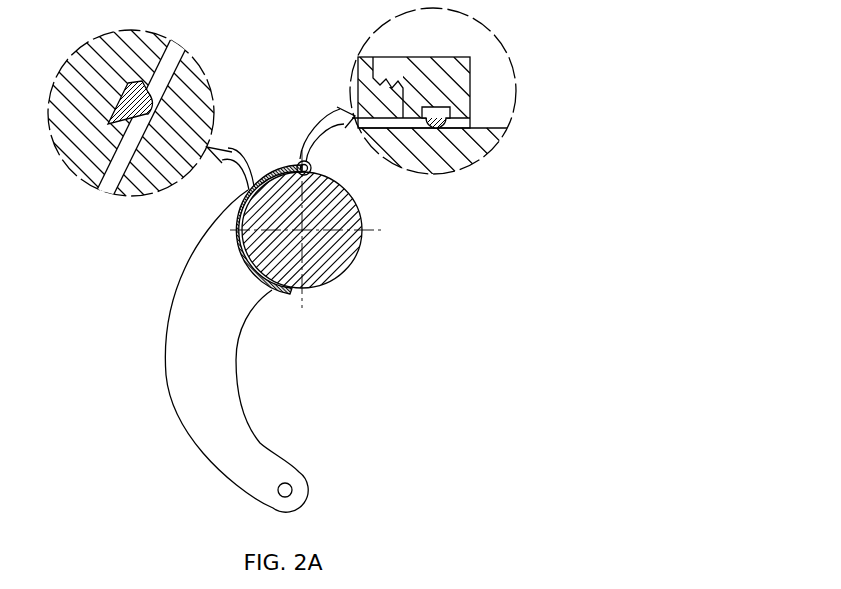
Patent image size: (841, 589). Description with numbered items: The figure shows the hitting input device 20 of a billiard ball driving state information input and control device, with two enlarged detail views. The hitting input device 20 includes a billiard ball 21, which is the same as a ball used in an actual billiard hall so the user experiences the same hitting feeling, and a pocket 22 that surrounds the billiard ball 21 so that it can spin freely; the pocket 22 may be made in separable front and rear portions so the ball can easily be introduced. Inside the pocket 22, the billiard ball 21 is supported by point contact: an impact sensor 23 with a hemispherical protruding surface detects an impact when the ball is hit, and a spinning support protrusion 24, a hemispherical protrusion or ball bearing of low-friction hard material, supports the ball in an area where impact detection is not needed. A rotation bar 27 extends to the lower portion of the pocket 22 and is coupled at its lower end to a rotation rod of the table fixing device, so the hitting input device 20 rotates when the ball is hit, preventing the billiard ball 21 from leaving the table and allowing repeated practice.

The hitting input device 20 is at (408, 386).
The billiard ball 21 is at (200, 93).
The pocket 22 is at (68, 148).
The impact sensor 23 is at (132, 115).
The spinning support protrusion 24 is at (441, 128).
The rotation bar 27 is at (252, 443).